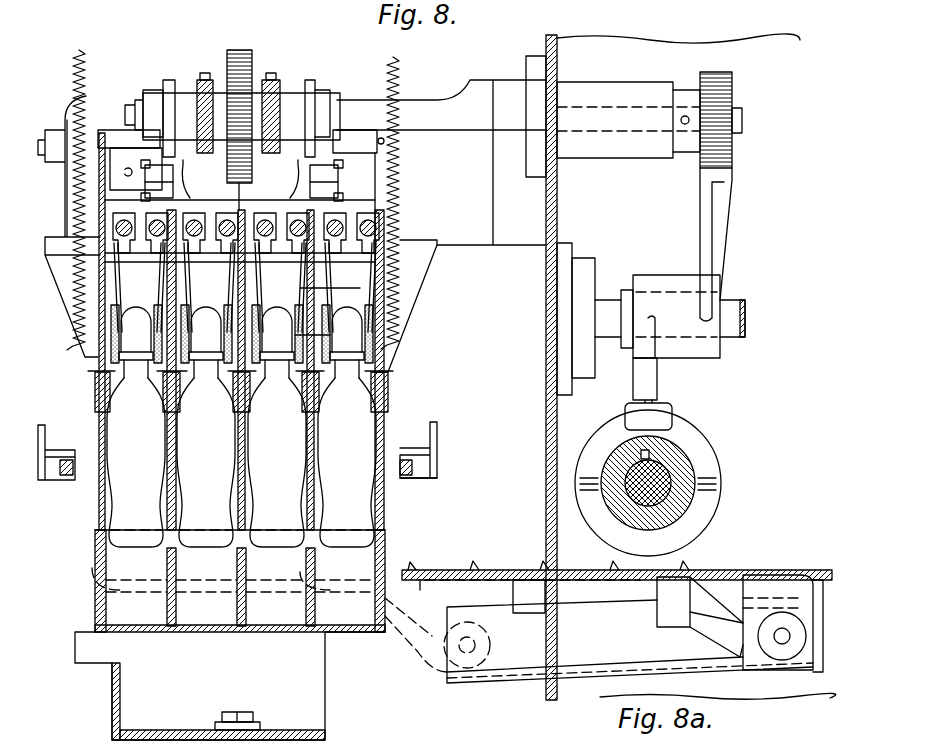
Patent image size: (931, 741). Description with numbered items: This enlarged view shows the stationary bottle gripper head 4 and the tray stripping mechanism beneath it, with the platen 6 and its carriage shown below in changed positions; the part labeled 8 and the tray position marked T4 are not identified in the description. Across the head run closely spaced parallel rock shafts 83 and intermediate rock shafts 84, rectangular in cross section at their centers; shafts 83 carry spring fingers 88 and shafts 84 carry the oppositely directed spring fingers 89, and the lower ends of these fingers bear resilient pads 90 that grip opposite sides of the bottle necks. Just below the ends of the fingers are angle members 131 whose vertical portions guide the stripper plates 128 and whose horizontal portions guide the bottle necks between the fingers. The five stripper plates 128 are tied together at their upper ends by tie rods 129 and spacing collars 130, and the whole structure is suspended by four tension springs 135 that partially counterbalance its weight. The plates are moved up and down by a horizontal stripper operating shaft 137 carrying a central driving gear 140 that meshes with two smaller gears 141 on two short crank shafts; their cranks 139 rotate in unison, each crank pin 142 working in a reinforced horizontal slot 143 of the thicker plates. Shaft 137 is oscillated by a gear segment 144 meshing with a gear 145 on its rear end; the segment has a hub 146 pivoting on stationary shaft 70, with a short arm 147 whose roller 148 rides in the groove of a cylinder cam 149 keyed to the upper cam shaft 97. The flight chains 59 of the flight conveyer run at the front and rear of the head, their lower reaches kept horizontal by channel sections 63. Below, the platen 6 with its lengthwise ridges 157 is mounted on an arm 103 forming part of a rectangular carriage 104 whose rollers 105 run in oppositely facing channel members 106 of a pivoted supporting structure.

The bottle gripper head 4 is at (112, 80).
The platen 6 is at (95, 555).
The tank base 8 is at (138, 682).
The endless chains 59 is at (75, 458).
The channel sections 63 is at (410, 478).
The stationary shaft 70 is at (737, 337).
The rock shafts 83 is at (175, 207).
The intermediate rock shafts 84 is at (375, 228).
The spring fingers 88 is at (125, 300).
The spring fingers 89 is at (417, 263).
The resilient pads 90 is at (325, 335).
The upper cam shaft 97 is at (672, 495).
The arm 103 is at (633, 600).
The carriage 104 is at (774, 576).
The rollers 105 is at (764, 660).
The channel members 106 is at (735, 598).
The stripper plates 128 is at (177, 447).
The tie rods 129 is at (80, 100).
The spacing collars 130 is at (122, 132).
The angle members 131 is at (92, 387).
The tension springs 135 is at (73, 62).
The stripper operating shaft 137 is at (448, 131).
The cranks 139 is at (192, 185).
The central driving gear 140 is at (255, 50).
The smaller gears 141 is at (243, 97).
The crank pin 142 is at (160, 176).
The horizontal slot 143 is at (160, 189).
The gear segment 144 is at (700, 190).
The gear 145 is at (712, 80).
The hub 146 is at (658, 275).
The short arm 147 is at (657, 377).
The roller 148 is at (665, 418).
The cylinder cam 149 is at (715, 445).
The ridges 157 is at (473, 565).
The table T4 is at (95, 531).